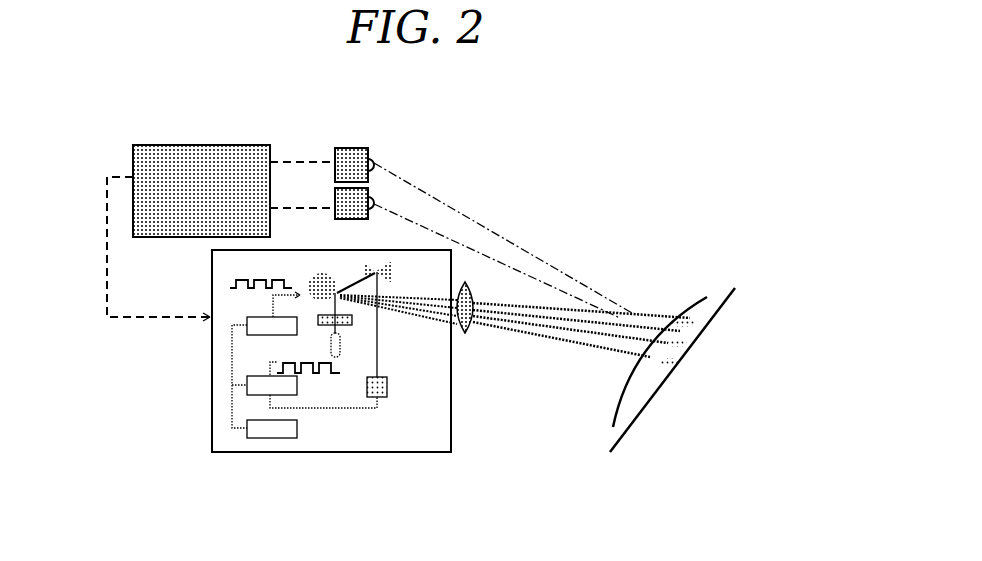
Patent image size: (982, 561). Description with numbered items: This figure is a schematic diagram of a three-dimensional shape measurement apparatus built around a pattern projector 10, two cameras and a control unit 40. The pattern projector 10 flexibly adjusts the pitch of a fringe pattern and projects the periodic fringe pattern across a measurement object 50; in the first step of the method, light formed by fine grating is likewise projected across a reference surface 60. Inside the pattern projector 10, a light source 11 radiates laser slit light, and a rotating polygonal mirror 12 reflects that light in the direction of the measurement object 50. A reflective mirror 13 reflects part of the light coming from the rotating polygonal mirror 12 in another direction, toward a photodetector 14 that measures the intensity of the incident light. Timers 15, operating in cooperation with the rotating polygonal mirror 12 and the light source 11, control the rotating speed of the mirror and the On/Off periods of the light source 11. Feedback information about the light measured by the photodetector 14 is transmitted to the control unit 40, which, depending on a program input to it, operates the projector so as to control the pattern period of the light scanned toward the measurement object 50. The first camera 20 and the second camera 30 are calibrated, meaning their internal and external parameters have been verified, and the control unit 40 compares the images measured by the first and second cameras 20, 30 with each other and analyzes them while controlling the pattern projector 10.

The pattern projector 10 is at (303, 335).
The light source 11 is at (353, 320).
The rotating polygonal mirror 12 is at (322, 284).
The reflective mirror 13 is at (377, 272).
The photodetector 14 is at (381, 397).
The timers 15 is at (247, 437).
The first camera 20 is at (337, 200).
The second camera 30 is at (352, 155).
The control unit 40 is at (133, 158).
The measurement object 50 is at (683, 310).
The reference surface 60 is at (665, 387).